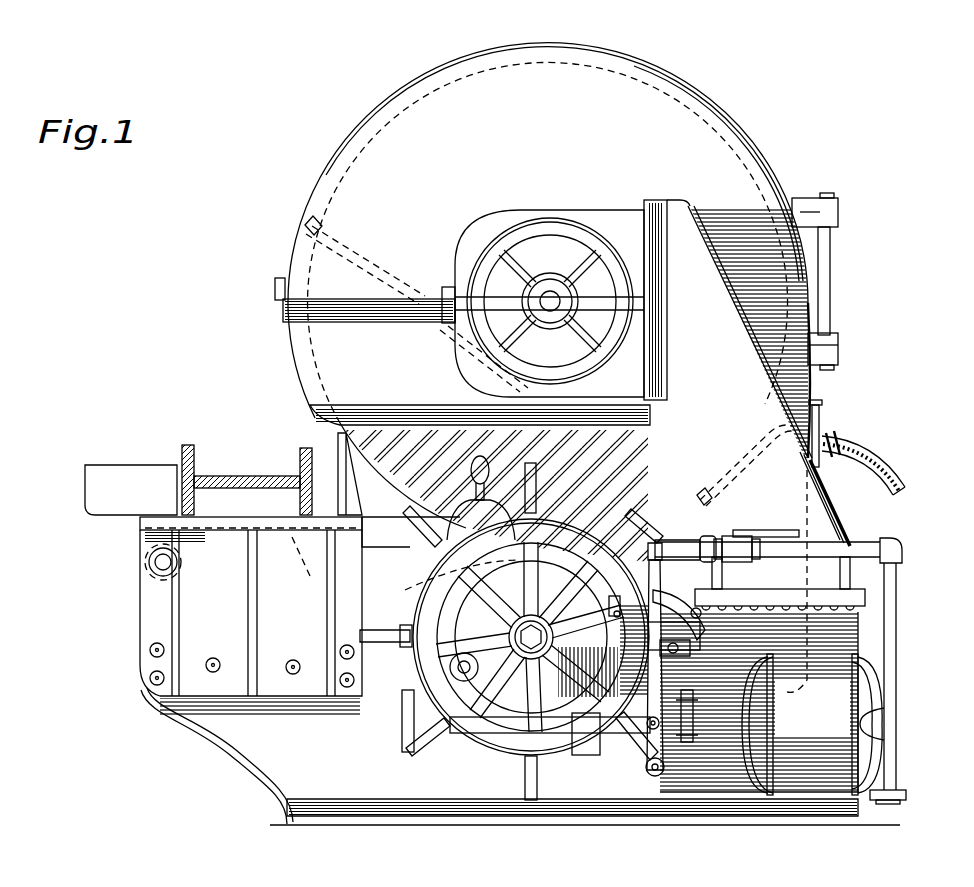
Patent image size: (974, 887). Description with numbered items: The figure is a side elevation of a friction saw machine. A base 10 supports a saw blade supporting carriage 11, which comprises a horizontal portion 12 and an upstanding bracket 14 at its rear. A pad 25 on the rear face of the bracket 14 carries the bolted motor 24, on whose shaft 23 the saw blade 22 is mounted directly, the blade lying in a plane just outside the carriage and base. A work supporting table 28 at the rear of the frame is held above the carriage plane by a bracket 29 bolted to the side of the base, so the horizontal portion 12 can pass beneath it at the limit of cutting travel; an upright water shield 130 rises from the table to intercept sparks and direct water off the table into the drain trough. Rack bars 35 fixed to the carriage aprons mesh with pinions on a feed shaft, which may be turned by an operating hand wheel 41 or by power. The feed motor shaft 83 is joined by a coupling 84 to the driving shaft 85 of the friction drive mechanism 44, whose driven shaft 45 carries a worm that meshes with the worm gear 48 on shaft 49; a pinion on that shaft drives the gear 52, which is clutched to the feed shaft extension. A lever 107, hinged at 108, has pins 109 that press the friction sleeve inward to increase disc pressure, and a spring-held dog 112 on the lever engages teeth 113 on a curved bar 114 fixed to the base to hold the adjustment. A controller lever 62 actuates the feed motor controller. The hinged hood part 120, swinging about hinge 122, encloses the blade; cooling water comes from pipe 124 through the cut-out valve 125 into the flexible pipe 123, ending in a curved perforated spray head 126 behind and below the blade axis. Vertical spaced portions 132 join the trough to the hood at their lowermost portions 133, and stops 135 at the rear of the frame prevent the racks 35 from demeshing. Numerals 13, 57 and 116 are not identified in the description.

The base 10 is at (228, 728).
The saw blade supporting carriage 11 is at (846, 530).
The horizontal portion of the carriage 12 is at (386, 528).
The hidden member 13 is at (820, 676).
The upstanding bracket 14 is at (819, 430).
The saw blade 22 is at (338, 443).
The motor shaft 23 is at (548, 301).
The motor 24 is at (538, 218).
The pad 25 is at (648, 207).
The work supporting table 28 is at (160, 526).
The bracket 29 is at (160, 622).
The rack bars 35 is at (860, 602).
The operating hand wheel 41 is at (548, 745).
The friction drive mechanism 44 is at (595, 748).
The shaft 45 is at (505, 735).
The worm gear 48 is at (425, 616).
The shaft 49 is at (440, 672).
The gear 52 is at (606, 522).
The bracket 57 is at (395, 713).
The controller lever 62 is at (476, 498).
The feed motor shaft 83 is at (765, 714).
The coupling 84 is at (695, 735).
The driving shaft 85 is at (650, 730).
The lever 107 is at (662, 552).
The hinge 108 is at (672, 781).
The pins 109 is at (662, 700).
The spring-held dog 112 is at (655, 592).
The teeth 113 is at (780, 592).
The curved bar 114 is at (602, 601).
The scroll housing 116 is at (723, 160).
The hood part 120 is at (400, 590).
The hinge 122 is at (836, 228).
The pipe 123 is at (866, 458).
The pipe 124 is at (860, 546).
The cut-out valve 125 is at (762, 540).
The curved perforated spray head 126 is at (384, 278).
The upright water shield 130 is at (338, 472).
The vertical spaced portions 132 is at (820, 502).
The lowermost portions 133 is at (840, 628).
The stops 135 is at (452, 428).